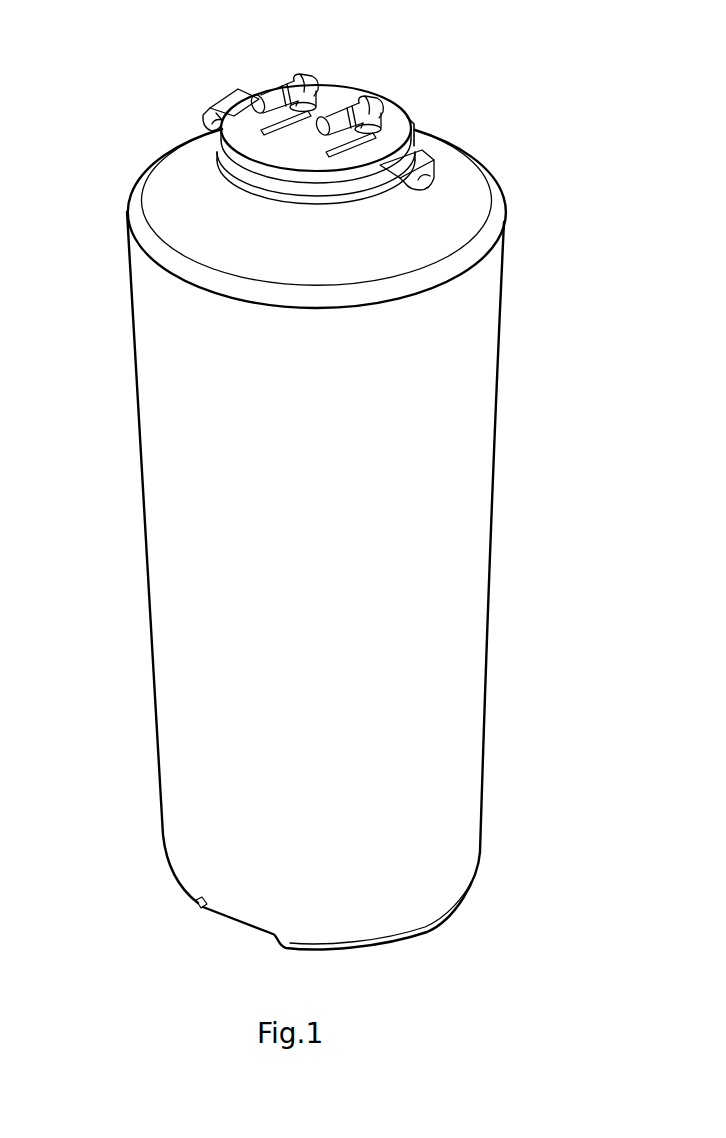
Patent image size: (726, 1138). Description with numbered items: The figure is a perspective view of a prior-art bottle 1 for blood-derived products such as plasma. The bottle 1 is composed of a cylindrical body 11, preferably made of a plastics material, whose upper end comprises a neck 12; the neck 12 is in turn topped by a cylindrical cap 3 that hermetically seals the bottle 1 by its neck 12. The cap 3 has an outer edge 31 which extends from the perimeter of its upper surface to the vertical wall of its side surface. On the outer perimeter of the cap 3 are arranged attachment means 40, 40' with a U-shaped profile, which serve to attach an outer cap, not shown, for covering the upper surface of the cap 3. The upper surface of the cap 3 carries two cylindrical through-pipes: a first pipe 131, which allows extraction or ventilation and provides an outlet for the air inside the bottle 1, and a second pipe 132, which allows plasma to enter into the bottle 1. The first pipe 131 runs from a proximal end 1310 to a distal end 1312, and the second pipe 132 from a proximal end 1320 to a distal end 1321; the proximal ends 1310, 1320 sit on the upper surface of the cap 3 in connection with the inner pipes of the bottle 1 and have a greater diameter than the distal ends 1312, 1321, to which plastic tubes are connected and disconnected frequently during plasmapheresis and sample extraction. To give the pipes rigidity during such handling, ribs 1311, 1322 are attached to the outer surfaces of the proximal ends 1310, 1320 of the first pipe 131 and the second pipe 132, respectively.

The bottle 1 is at (145, 96).
The cylindrical body 11 is at (473, 518).
The neck 12 is at (372, 207).
The cylindrical cap 3 is at (328, 93).
The outer edge 31 is at (426, 176).
The first pipe 131 is at (283, 70).
The proximal end 1310 is at (332, 93).
The rib 1311 is at (290, 115).
The distal end 1312 is at (245, 125).
The second pipe 132 is at (342, 100).
The proximal end 1320 is at (372, 140).
The distal end 1321 is at (338, 128).
The rib 1322 is at (418, 137).
The attachment means 40 is at (217, 86).
The attachment means 40' is at (459, 146).